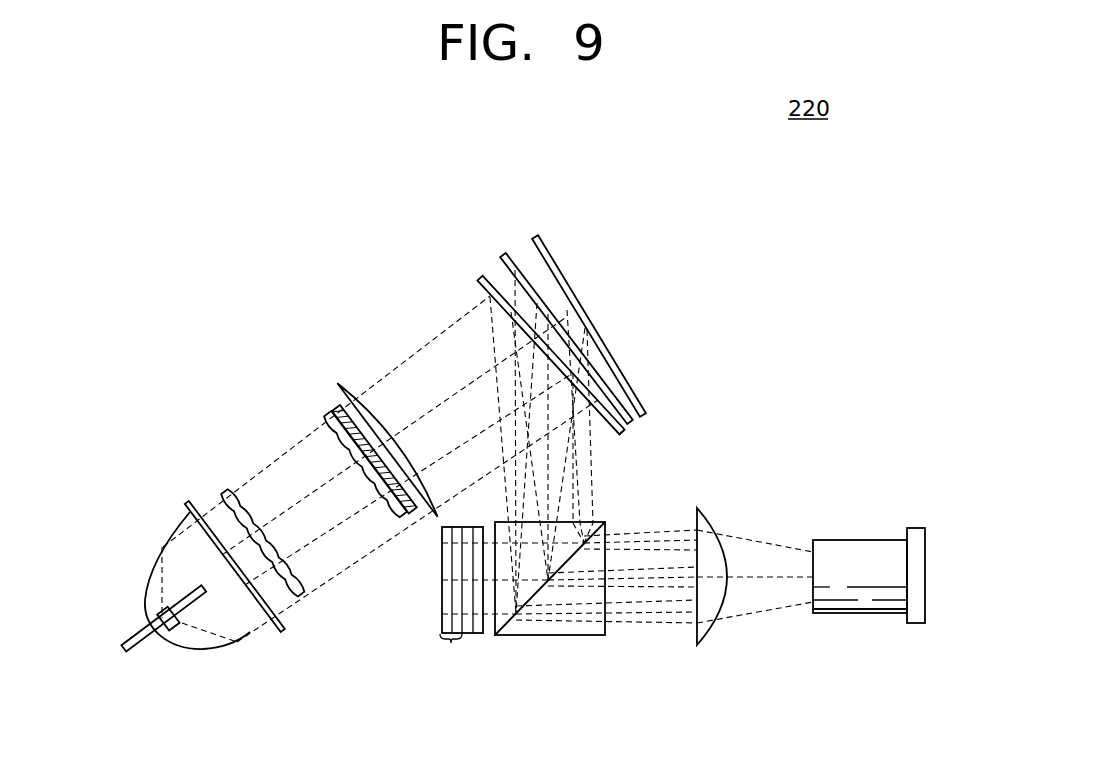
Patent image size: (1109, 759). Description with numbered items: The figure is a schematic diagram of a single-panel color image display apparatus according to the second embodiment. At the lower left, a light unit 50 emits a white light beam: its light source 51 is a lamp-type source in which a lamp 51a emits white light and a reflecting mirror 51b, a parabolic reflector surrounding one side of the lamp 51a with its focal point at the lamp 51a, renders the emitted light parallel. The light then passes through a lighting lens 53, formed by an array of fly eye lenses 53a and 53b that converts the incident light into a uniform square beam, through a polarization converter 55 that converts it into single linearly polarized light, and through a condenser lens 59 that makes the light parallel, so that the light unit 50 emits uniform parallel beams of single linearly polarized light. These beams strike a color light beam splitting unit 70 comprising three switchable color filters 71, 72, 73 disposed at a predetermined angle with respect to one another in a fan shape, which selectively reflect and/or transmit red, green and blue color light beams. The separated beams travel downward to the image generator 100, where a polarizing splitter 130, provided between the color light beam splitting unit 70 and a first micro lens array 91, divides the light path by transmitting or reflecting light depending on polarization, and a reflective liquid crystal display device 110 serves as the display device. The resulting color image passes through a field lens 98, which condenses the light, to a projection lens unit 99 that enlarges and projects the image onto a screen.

The light unit 50 is at (190, 345).
The light source 51 is at (243, 662).
The lamp 51a is at (183, 628).
The reflecting mirror 51b is at (170, 535).
The lighting lens 53 is at (235, 410).
The fly eye lens 53a is at (228, 495).
The fly eye lens 53b is at (325, 414).
The polarization converter 55 is at (333, 400).
The condenser lens 59 is at (343, 382).
The color light beam splitting unit 70 is at (600, 226).
The switchable color filter 71 is at (618, 433).
The switchable color filter 72 is at (628, 421).
The switchable color filter 73 is at (648, 413).
The image generator 100 is at (413, 660).
The reflective liquid crystal display device 110 is at (453, 653).
The first micro lens array 91 is at (477, 635).
The polarizing splitter 130 is at (560, 637).
The field lens 98 is at (700, 640).
The projection lens unit 99 is at (862, 614).